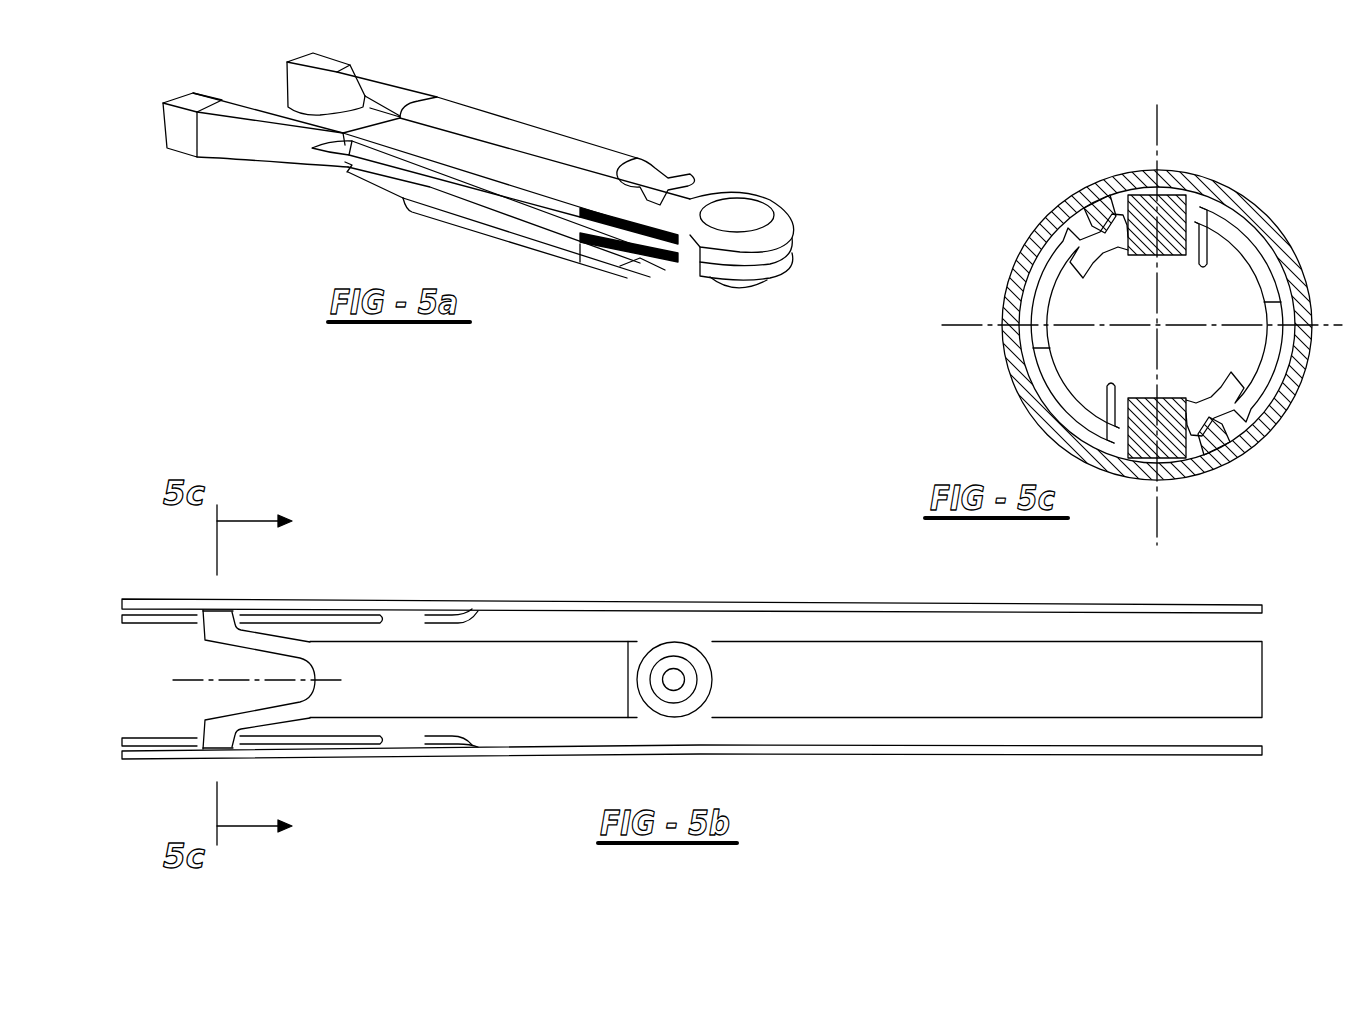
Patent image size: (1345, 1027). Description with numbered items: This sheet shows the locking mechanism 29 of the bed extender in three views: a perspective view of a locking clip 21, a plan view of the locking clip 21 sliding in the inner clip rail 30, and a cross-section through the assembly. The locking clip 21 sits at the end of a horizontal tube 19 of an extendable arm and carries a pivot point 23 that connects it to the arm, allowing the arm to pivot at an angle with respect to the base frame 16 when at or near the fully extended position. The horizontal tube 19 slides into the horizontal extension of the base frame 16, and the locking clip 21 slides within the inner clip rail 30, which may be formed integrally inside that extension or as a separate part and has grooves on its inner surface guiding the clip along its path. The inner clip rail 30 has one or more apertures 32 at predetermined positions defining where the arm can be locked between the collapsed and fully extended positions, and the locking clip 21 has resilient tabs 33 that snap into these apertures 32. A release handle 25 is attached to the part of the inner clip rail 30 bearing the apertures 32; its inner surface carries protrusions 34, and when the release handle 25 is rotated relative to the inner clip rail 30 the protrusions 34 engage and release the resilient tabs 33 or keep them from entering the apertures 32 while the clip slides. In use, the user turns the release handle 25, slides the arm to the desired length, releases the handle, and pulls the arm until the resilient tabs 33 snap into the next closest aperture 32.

In FIG. 5B, the base frame 16 is at (500, 598).
In FIG. 5C, the horizontal tube 19 is at (955, 268).
In FIG. 5A, the locking clip 21 is at (555, 128).
In FIG. 5B, the locking clip 21 is at (571, 640).
In FIG. 5A, the pivot point 23 is at (737, 212).
In FIG. 5B, the pivot point 23 is at (673, 679).
In FIG. 5B, the release handle 25 is at (378, 606).
In FIG. 5C, the release handle 25 is at (1015, 251).
In FIG. 5A, the locking mechanism 29 is at (465, 38).
In FIG. 5B, the locking mechanism 29 is at (622, 628).
In FIG. 5A, the inner clip rail 30 is at (495, 209).
In FIG. 5B, the inner clip rail 30 is at (130, 742).
In FIG. 5C, the inner clip rail 30 is at (1057, 405).
In FIG. 5B, the aperture 32 is at (200, 750).
In FIG. 5A, the resilient tab 33 is at (257, 138).
In FIG. 5C, the resilient tab 33 is at (1183, 233).
In FIG. 5C, the protrusion 34 is at (1084, 218).